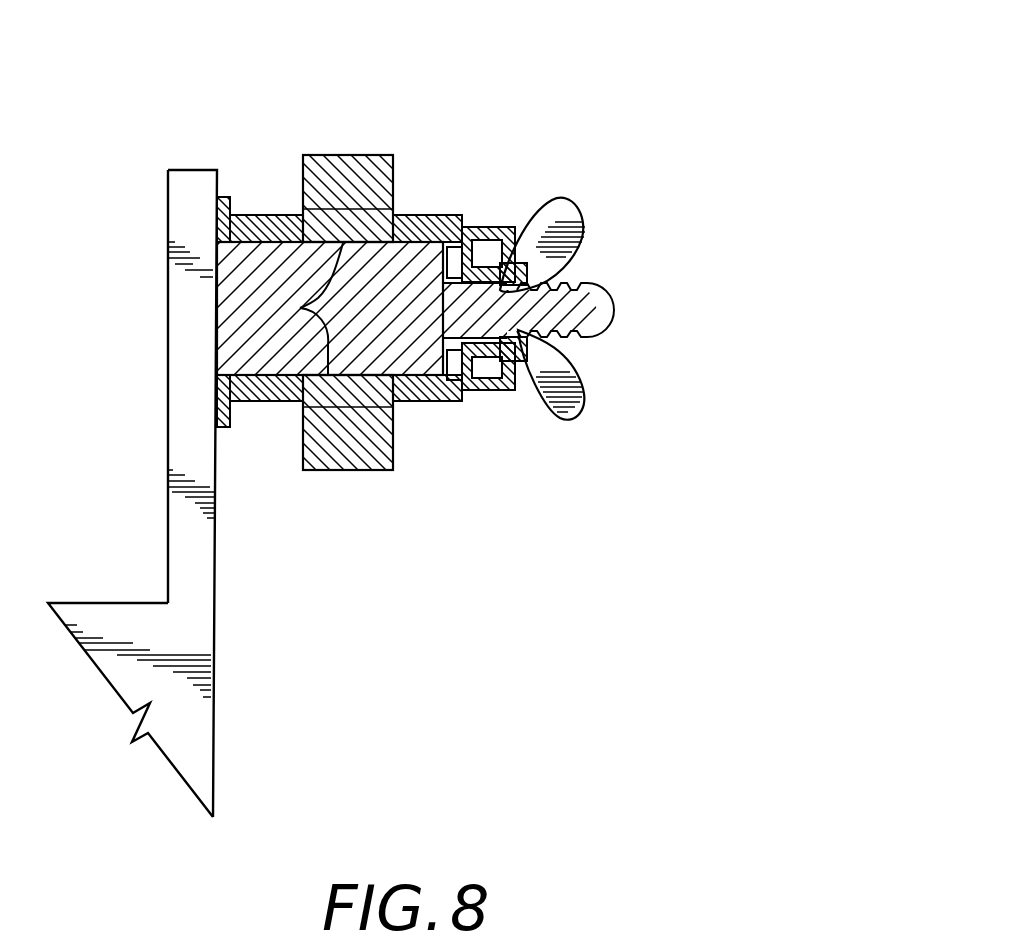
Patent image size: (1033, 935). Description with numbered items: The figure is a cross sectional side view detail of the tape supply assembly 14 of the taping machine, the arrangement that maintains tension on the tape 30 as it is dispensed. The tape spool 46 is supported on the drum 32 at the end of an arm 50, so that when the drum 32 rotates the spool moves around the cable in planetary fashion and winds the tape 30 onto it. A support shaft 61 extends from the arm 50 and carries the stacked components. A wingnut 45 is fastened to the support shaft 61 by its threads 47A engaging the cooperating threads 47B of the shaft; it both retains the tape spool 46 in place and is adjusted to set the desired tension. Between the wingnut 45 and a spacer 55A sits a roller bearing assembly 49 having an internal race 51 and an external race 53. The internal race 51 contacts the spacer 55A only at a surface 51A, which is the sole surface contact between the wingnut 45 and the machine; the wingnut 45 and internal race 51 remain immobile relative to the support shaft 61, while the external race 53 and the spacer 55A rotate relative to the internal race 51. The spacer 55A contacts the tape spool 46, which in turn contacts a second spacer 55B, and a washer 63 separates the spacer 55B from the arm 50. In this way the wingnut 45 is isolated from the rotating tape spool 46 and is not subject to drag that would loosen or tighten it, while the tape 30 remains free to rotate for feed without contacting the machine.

The tape supply assembly 14 is at (690, 95).
The tape 30 is at (368, 155).
The drum 32 is at (90, 603).
The wingnut 45 is at (585, 222).
The tape spool 46 is at (300, 308).
The threads 47A is at (561, 355).
The threads 47B is at (578, 342).
The roller bearing assembly 49 is at (512, 432).
The arm 50 is at (167, 362).
The internal race 51 is at (462, 340).
The surface 51A is at (547, 284).
The external race 53 is at (497, 228).
The spacer 55A is at (423, 215).
The second spacer 55B is at (270, 215).
The support shaft 61 is at (612, 321).
The washer 63 is at (226, 198).